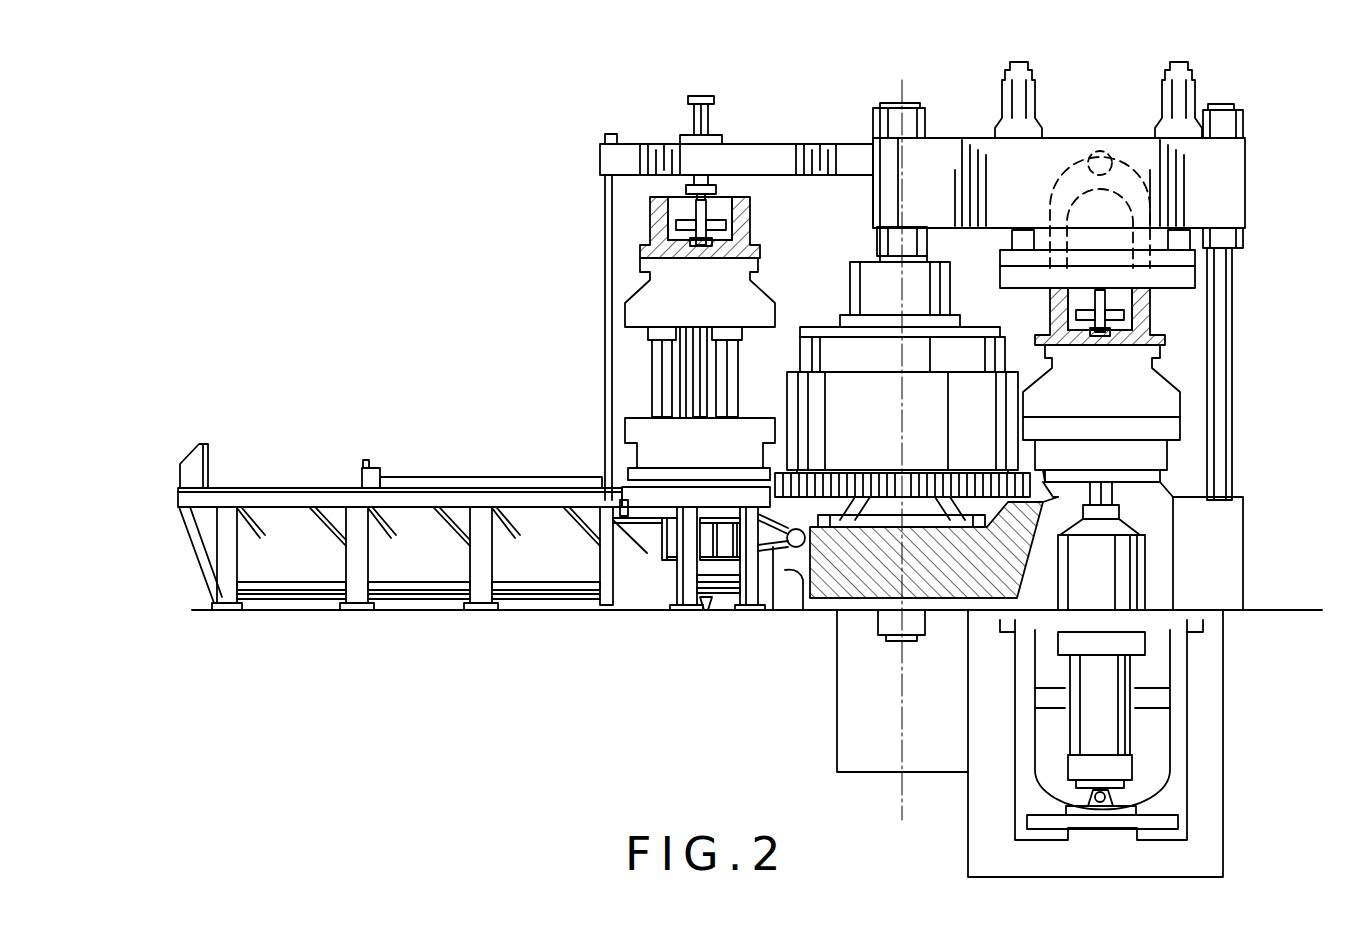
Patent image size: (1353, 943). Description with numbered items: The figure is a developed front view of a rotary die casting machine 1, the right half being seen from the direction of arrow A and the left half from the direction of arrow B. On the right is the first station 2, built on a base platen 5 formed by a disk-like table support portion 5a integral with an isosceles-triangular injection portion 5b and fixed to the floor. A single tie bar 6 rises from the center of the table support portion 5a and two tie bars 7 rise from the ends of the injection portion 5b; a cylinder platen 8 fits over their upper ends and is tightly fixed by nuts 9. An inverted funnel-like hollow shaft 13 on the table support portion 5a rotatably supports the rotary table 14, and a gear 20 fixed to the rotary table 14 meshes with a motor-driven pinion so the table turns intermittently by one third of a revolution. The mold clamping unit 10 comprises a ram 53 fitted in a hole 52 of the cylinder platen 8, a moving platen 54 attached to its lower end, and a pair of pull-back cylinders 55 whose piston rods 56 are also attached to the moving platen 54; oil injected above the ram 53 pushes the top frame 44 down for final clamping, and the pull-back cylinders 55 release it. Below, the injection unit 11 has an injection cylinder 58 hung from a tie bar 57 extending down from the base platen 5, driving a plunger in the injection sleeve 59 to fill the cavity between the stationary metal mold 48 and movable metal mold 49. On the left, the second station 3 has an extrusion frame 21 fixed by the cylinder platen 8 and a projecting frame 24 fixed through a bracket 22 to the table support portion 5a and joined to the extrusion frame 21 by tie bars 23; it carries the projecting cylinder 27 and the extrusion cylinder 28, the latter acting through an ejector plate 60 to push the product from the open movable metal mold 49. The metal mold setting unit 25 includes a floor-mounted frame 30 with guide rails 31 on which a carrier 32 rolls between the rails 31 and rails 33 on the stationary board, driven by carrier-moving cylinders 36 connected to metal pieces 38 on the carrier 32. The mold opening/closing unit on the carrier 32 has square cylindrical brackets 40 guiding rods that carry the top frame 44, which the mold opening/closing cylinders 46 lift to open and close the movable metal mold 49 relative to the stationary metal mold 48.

The rotary die casting machine 1 is at (1254, 109).
The first station 2 is at (1254, 171).
The second station 3 is at (590, 339).
The base platen 5 is at (1252, 521).
The table support portion 5a is at (810, 597).
The injection portion 5b is at (1236, 570).
The tie bar 6 is at (890, 104).
The tie bars 7 is at (1232, 365).
The cylinder platen 8 is at (1135, 138).
The nuts 9 is at (925, 126).
The mold clamping unit 10 is at (1152, 189).
The injection unit 11 is at (1196, 684).
The hollow shaft 13 is at (932, 508).
The rotary table 14 is at (1022, 404).
The gear 20 is at (878, 480).
The extrusion frame 21 is at (772, 145).
The bracket 22 is at (776, 604).
The tie bars 23 is at (604, 217).
The projecting frame 24 is at (647, 553).
The metal mold setting unit 25 is at (343, 468).
The projecting cylinder 27 is at (705, 604).
The extrusion cylinder 28 is at (692, 101).
The frame 30 is at (421, 607).
The guide rails 31 is at (265, 484).
The carrier 32 is at (655, 468).
The rails 33 is at (668, 492).
The carrier-moving cylinders 36 is at (422, 478).
The metal pieces 38 is at (735, 468).
The square cylindrical brackets 40 is at (660, 372).
The top frame 44 is at (748, 237).
The mold opening/closing cylinders 46 is at (697, 338).
The stationary metal mold 48 is at (630, 422).
The movable metal mold 49 is at (652, 290).
The hole 52 is at (1100, 160).
The ram 53 is at (1055, 172).
The moving platen 54 is at (1196, 278).
The pull-back cylinders 55 is at (1012, 70).
The piston rods 56 is at (1186, 232).
The tie bar 57 is at (1190, 727).
The injection cylinder 58 is at (1130, 740).
The injection sleeve 59 is at (1112, 498).
The ejector plate 60 is at (732, 228).
The arrow A is at (1292, 845).
The arrow B is at (600, 752).